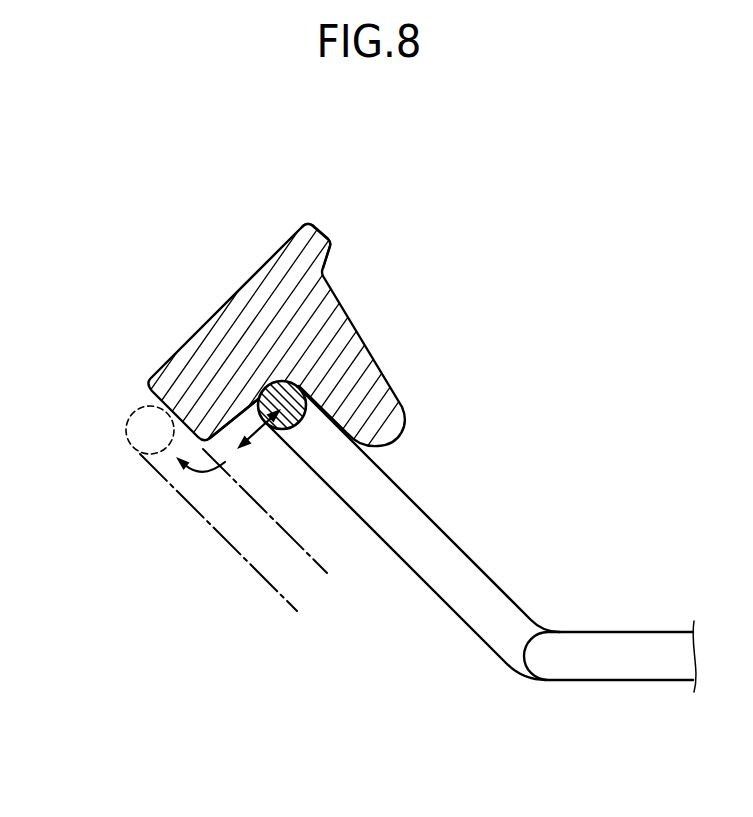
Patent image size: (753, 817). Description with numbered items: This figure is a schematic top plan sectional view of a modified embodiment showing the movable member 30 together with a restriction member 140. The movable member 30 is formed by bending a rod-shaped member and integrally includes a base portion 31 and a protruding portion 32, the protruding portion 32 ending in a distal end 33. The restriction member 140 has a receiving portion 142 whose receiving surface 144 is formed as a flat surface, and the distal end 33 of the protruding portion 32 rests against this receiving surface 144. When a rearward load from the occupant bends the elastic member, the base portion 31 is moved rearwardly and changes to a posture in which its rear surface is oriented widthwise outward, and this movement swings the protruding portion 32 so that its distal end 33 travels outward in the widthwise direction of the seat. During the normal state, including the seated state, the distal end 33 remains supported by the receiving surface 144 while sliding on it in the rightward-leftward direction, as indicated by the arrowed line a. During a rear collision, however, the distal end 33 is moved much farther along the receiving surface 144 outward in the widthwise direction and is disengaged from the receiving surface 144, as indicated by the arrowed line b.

The movable member 30 is at (418, 572).
The base portion 31 is at (626, 647).
The protruding portion 32 is at (402, 498).
The distal end 33 is at (287, 400).
The restriction member 140 is at (238, 256).
The receiving portion 142 is at (322, 232).
The receiving surface 144 is at (228, 428).
The arrowed line a is at (260, 442).
The arrowed line b is at (200, 477).